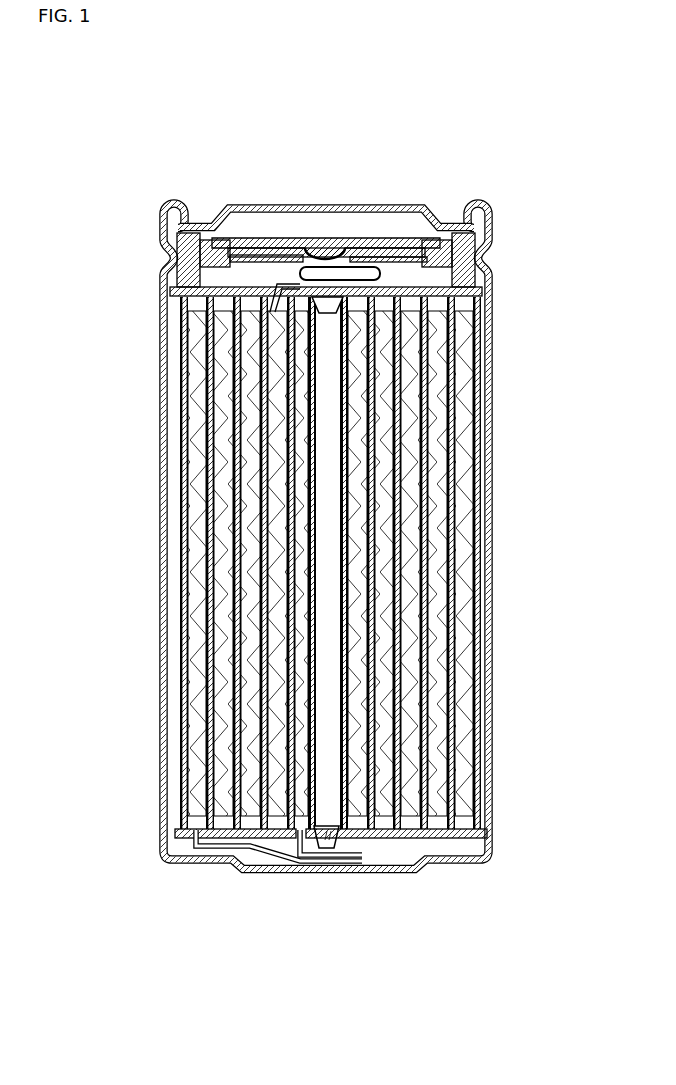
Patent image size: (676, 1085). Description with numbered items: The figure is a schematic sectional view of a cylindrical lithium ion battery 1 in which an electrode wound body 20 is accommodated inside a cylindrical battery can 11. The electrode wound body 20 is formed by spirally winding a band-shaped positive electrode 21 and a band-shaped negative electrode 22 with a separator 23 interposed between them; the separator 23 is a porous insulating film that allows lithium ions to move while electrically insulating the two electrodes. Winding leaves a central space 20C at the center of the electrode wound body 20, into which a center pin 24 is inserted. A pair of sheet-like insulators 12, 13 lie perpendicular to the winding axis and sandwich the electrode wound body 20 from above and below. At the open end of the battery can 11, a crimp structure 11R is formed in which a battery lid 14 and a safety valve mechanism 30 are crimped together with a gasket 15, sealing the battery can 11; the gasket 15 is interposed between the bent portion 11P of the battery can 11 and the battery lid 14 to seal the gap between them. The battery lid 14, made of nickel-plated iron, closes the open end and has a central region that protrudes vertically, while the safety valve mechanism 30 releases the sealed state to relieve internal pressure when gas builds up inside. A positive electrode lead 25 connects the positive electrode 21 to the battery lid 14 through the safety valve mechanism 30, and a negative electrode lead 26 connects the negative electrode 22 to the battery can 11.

The lithium ion battery 1 is at (253, 112).
The battery can 11 is at (370, 503).
The bent portion 11P is at (473, 203).
The crimp structure 11R is at (494, 208).
The insulator 12 is at (478, 290).
The insulator 13 is at (480, 832).
The battery lid 14 is at (303, 205).
The gasket 15 is at (488, 277).
The electrode wound body 20 is at (378, 572).
The central space 20C is at (331, 770).
The positive electrode 21 is at (432, 463).
The negative electrode 22 is at (458, 497).
The separator 23 is at (448, 532).
The center pin 24 is at (327, 569).
The positive electrode lead 25 is at (318, 256).
The negative electrode lead 26 is at (258, 858).
The safety valve mechanism 30 is at (410, 236).